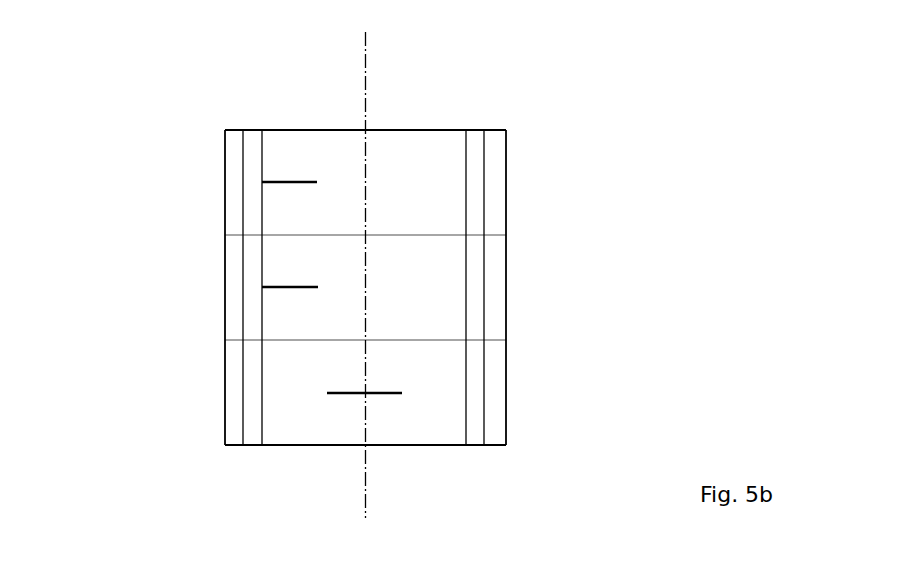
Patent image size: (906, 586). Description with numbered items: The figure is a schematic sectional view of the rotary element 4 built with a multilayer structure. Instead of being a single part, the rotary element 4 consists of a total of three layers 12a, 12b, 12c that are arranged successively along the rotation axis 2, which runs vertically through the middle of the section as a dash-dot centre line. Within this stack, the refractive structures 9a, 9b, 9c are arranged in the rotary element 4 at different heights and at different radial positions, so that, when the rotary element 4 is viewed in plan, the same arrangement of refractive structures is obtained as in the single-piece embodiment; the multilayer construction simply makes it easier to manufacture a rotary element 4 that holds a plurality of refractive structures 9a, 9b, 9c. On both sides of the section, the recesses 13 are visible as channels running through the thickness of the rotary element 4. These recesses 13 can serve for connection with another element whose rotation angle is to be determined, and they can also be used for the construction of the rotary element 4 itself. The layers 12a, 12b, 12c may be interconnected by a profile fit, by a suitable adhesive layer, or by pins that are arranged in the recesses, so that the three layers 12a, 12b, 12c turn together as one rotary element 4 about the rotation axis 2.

The rotary element 4 is at (120, 73).
The rotation axis 2 is at (366, 100).
The recesses 13 is at (252, 197).
The first layer 12a is at (507, 385).
The second layer 12b is at (507, 300).
The third layer 12c is at (507, 210).
The refractive structure 9a is at (327, 393).
The further refractive structure 9b is at (262, 287).
The further refractive structure 9c is at (292, 180).